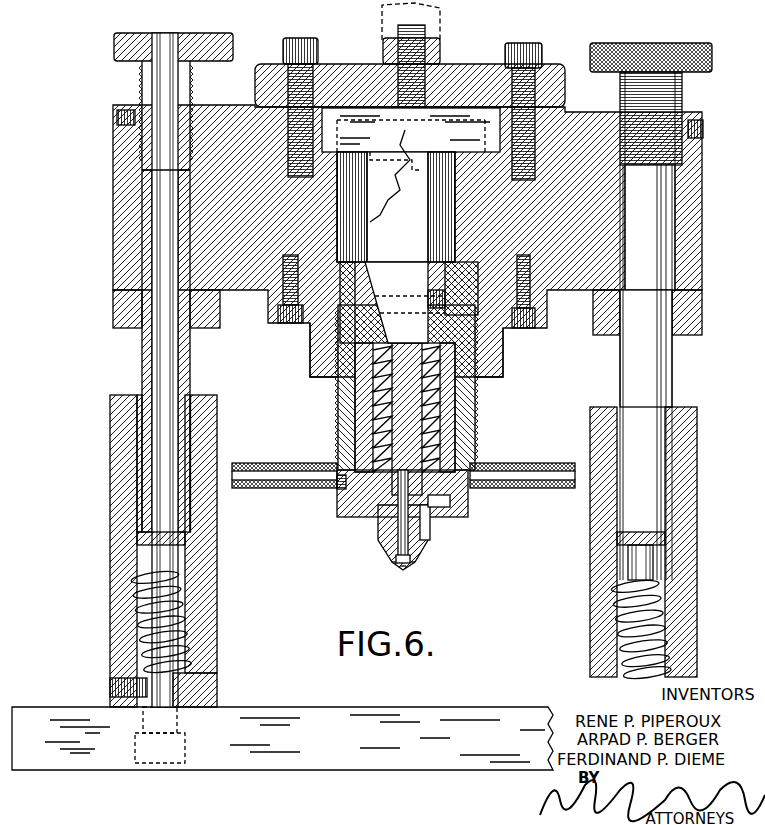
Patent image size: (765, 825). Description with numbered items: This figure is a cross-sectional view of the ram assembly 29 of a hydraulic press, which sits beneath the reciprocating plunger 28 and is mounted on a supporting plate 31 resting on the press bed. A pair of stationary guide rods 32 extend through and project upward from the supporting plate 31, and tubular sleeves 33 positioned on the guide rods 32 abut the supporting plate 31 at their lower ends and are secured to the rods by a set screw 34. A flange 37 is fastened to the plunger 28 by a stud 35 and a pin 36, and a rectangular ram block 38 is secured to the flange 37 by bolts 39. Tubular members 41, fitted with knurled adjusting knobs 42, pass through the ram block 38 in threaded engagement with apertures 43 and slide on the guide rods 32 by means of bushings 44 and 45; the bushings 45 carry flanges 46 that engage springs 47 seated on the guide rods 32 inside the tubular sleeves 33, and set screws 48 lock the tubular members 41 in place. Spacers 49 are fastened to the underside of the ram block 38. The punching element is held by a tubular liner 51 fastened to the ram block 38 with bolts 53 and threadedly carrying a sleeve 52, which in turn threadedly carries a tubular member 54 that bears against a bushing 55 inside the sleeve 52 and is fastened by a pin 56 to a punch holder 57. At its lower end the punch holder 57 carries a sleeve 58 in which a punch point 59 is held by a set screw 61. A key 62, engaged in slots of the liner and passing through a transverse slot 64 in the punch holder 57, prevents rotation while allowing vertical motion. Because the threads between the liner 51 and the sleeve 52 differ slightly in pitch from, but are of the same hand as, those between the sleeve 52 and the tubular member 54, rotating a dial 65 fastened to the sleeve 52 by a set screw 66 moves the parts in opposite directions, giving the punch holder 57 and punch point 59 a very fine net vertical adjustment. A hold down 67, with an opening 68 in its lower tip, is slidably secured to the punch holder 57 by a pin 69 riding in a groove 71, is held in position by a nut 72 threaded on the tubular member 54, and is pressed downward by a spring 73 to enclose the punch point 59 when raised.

The plunger 28 is at (440, 14).
The ram assembly 29 is at (122, 371).
The supporting plate 31 is at (290, 771).
The stationary guide rods 32 is at (175, 548).
The tubular sleeves 33 is at (216, 598).
The set screw 34 is at (110, 683).
The stud 35 is at (428, 55).
The pin 36 is at (405, 50).
The flange 37 is at (338, 72).
The ram block 38 is at (585, 112).
The bolts 39 is at (298, 40).
The tubular members 41 is at (145, 348).
The knurled adjusting knobs 42 is at (120, 42).
The apertures 43 is at (147, 257).
The bushings 44 is at (150, 219).
The bushings 45 is at (150, 500).
The flanges 46 is at (145, 535).
The springs 47 is at (140, 605).
The set screws 48 is at (118, 117).
The spacers 49 is at (116, 306).
The tubular liner 51 is at (498, 370).
The sleeve 52 is at (472, 417).
The bolts 53 is at (285, 312).
The tubular member 54 is at (448, 435).
The bushing 55 is at (458, 264).
The pin 56 is at (388, 268).
The punch holder 57 is at (378, 330).
The sleeve 58 is at (390, 548).
The punch point 59 is at (396, 562).
The set screw 61 is at (382, 512).
The key 62 is at (470, 142).
The slot 64 is at (390, 170).
The dial 65 is at (276, 464).
The set screw 66 is at (340, 490).
The hold down 67 is at (418, 550).
The opening 68 is at (403, 571).
The pin 69 is at (436, 508).
The groove 71 is at (427, 522).
The nut 72 is at (346, 514).
The spring 73 is at (440, 398).